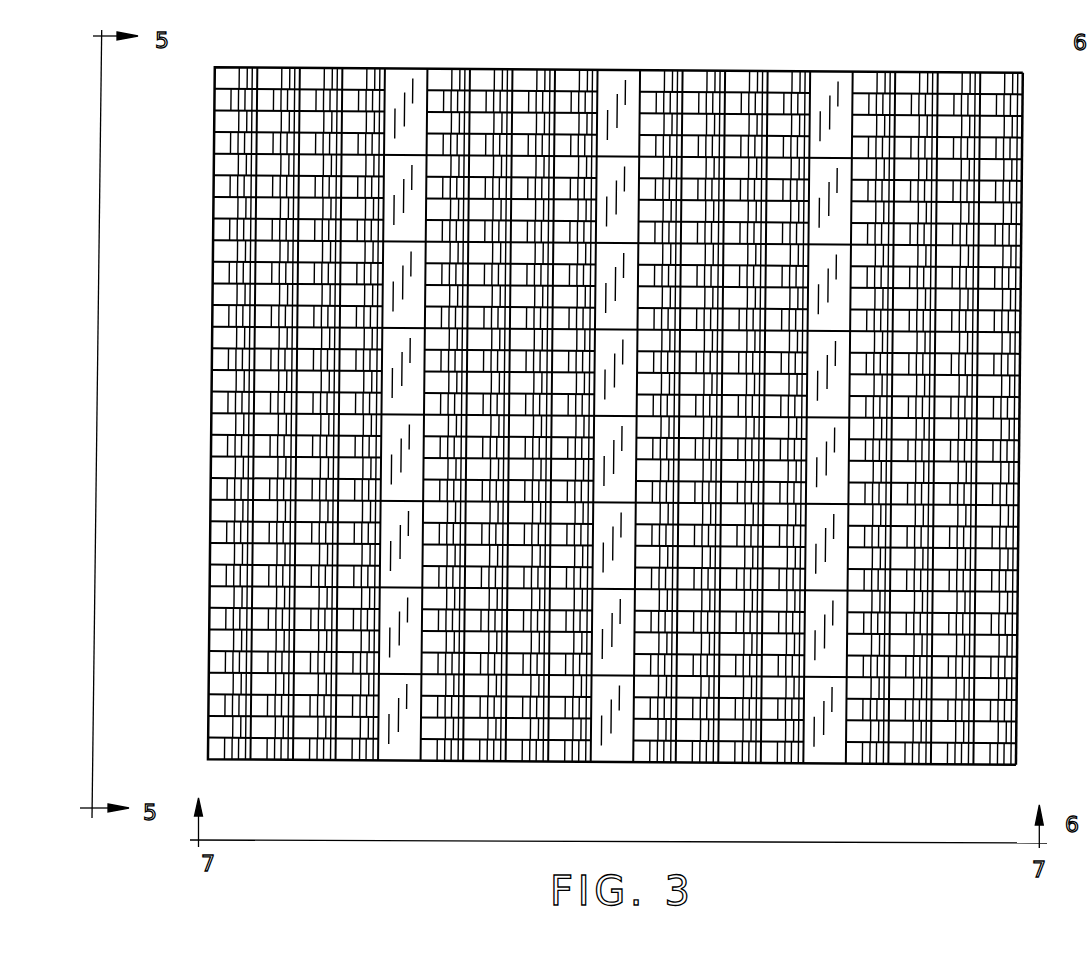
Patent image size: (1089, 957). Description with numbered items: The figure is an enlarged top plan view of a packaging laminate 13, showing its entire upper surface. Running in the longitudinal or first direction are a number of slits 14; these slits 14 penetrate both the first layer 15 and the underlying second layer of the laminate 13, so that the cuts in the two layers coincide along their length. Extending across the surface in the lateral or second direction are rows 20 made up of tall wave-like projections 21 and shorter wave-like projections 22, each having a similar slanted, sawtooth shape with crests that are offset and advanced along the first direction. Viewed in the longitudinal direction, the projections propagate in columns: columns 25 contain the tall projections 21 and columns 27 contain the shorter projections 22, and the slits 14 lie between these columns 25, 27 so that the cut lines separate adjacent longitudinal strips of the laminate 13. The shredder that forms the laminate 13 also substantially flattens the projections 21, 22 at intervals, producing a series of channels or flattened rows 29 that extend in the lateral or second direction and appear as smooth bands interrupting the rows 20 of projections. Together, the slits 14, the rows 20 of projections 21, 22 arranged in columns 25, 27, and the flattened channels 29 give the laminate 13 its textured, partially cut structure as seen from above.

The packaging laminate 13 is at (942, 57).
The slits 14 is at (352, 86).
The first layer 15 is at (1018, 310).
The rows 20 is at (306, 777).
The tall wave-like projections 21 is at (213, 252).
The shorter wave-like projections 22 is at (213, 230).
The columns of propagating projections 21 25 is at (195, 383).
The columns of propagating projections 22 27 is at (195, 448).
The channels or flattened rows 29 is at (834, 57).